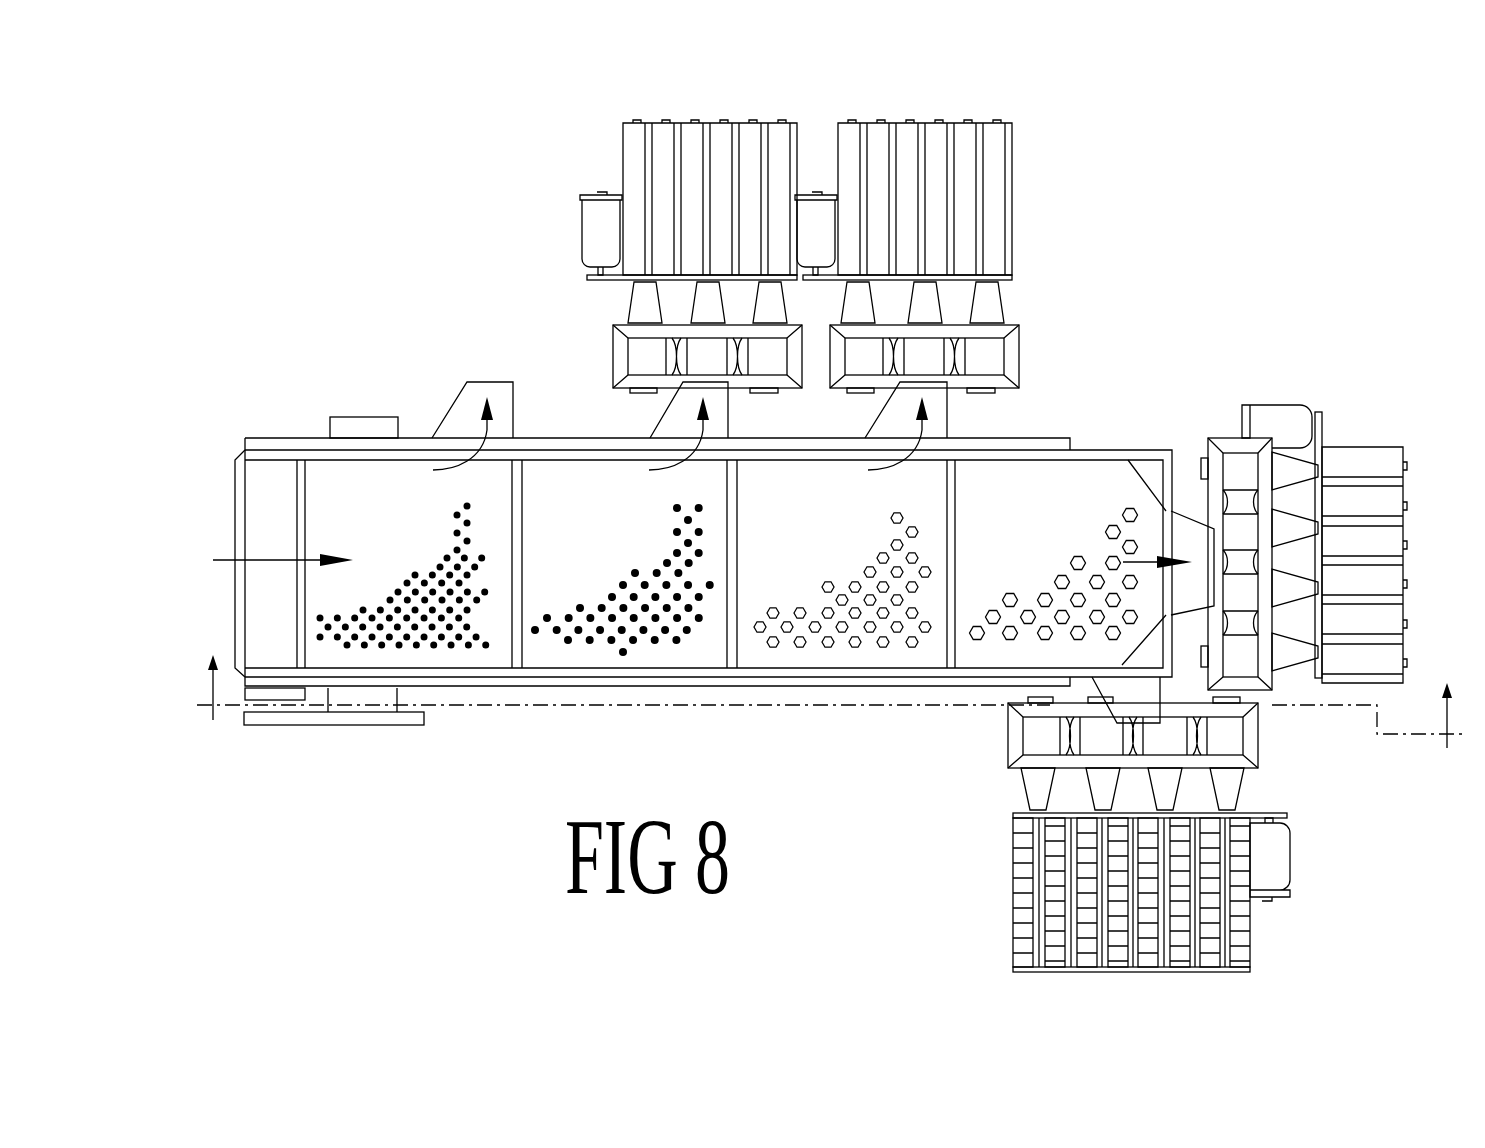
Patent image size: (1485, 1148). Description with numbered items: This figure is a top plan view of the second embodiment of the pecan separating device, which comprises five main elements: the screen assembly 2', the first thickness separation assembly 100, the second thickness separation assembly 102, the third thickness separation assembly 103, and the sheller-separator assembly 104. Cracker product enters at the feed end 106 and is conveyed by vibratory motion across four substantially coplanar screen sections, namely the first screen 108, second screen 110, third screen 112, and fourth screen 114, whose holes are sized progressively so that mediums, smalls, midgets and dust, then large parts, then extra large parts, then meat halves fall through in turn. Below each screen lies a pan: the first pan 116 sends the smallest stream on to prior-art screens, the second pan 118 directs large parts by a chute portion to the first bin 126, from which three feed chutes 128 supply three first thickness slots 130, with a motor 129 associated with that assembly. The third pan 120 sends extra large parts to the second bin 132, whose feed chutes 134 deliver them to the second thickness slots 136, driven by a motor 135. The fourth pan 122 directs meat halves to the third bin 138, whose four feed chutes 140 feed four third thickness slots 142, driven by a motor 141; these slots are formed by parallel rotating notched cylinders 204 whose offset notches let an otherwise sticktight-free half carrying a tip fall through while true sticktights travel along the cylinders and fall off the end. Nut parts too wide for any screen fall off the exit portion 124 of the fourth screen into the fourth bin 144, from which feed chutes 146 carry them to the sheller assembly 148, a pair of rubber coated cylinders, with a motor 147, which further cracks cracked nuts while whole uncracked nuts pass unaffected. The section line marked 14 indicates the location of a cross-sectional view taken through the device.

The first thickness separation assembly 100 is at (650, 179).
The second thickness separation assembly 102 is at (947, 180).
The third thickness separation assembly 103 is at (1107, 834).
The sheller-separator assembly 104 is at (1309, 497).
The feed end 106 is at (225, 495).
The first screen 108 is at (395, 525).
The second screen 110 is at (612, 553).
The third screen 112 is at (815, 520).
The fourth screen 114 is at (1044, 518).
The first pan 116 is at (462, 405).
The second pan 118 is at (676, 423).
The third pan 120 is at (937, 424).
The fourth pan 122 is at (1158, 712).
The exit portion of fourth screen 124 is at (1145, 510).
The first bin 126 is at (620, 365).
The feed chute 128 is at (707, 294).
The motor 129 is at (593, 240).
The first thickness slot 130 is at (770, 140).
The second bin 132 is at (1012, 364).
The feed chute 134 is at (990, 315).
The motor 135 is at (820, 222).
The second thickness slot 136 is at (987, 137).
The third bin 138 is at (1258, 723).
The feed chute 140 is at (1103, 790).
The motor 141 is at (1270, 857).
The third thickness slot 142 is at (1105, 918).
The fourth bin 144 is at (1230, 447).
The feed chute 146 is at (1306, 531).
The motor 147 is at (1273, 415).
The sheller assembly 148 is at (1361, 422).
The notched cylinders 204 is at (1057, 850).
The section line 14- 14 is at (830, 687).
The screen assembly 2' is at (198, 786).